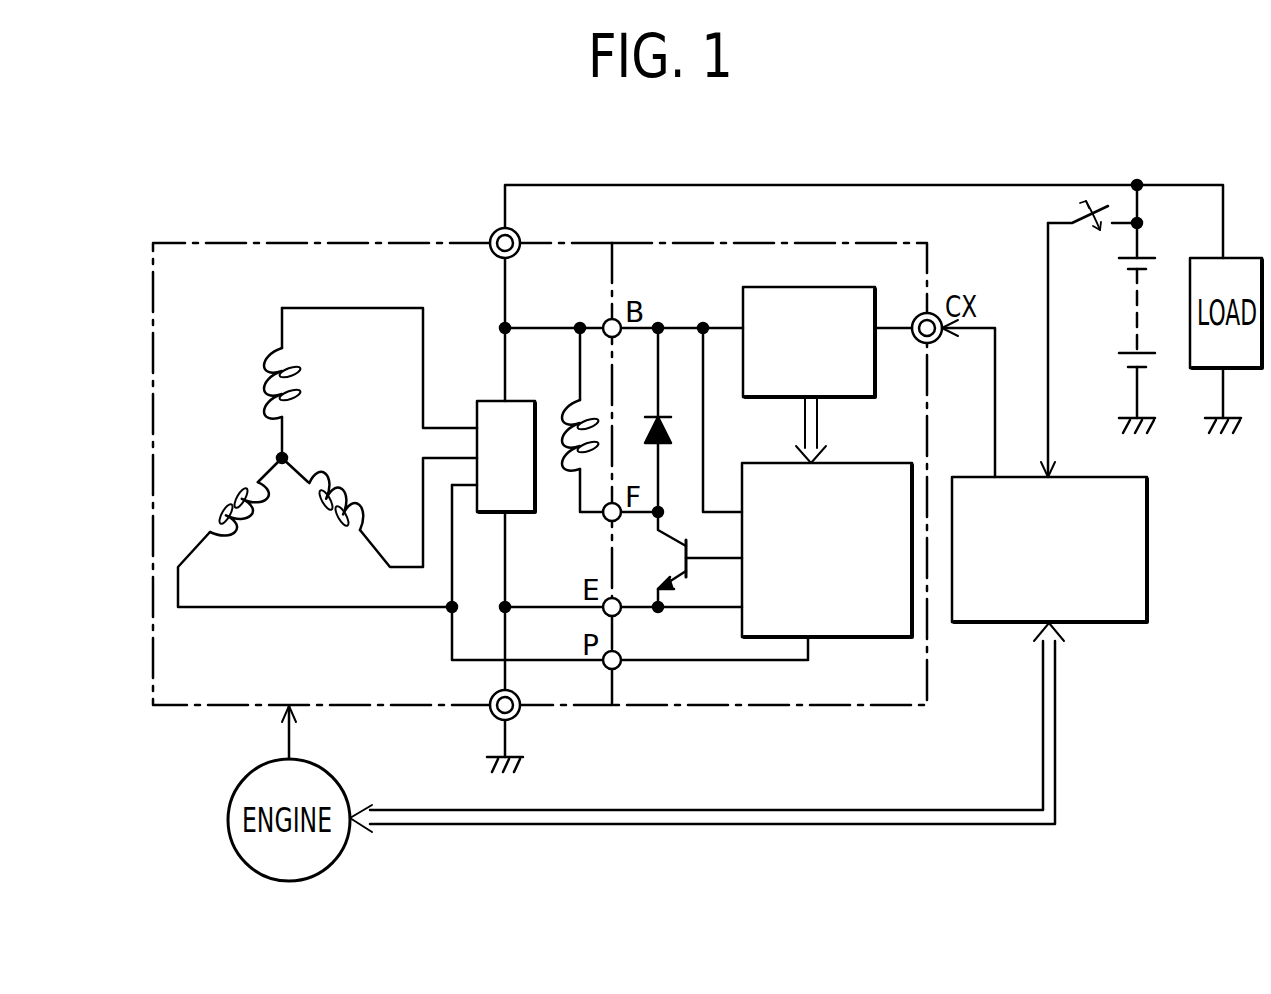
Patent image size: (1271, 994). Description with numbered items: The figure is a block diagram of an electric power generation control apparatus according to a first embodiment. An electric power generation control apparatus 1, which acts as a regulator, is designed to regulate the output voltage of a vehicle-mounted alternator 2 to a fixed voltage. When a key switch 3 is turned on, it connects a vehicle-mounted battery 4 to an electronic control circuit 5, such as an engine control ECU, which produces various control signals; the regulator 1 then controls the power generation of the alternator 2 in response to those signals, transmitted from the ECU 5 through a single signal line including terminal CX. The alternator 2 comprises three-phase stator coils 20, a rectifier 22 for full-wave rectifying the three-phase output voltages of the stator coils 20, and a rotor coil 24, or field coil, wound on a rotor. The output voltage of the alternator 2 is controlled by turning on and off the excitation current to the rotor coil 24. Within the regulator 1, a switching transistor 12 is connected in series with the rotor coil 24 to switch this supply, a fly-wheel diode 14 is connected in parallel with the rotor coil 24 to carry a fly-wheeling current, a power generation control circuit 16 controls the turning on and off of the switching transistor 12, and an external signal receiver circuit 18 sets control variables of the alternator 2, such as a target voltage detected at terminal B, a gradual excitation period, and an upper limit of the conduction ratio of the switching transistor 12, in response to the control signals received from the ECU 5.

The electric power generation control apparatus 1 is at (785, 242).
The vehicle-mounted alternator 2 is at (262, 242).
The key switch 3 is at (1083, 217).
The vehicle-mounted battery 4 is at (1127, 265).
The electronic control circuit 5 is at (1147, 556).
The switching transistor 12 is at (668, 548).
The fly-wheel diode 14 is at (653, 415).
The power generation control circuit 16 is at (865, 640).
The external signal receiver circuit 18 is at (742, 300).
The three-phase stator coils 20 is at (269, 388).
The rectifier 22 is at (487, 400).
The rotor coil 24 is at (567, 401).